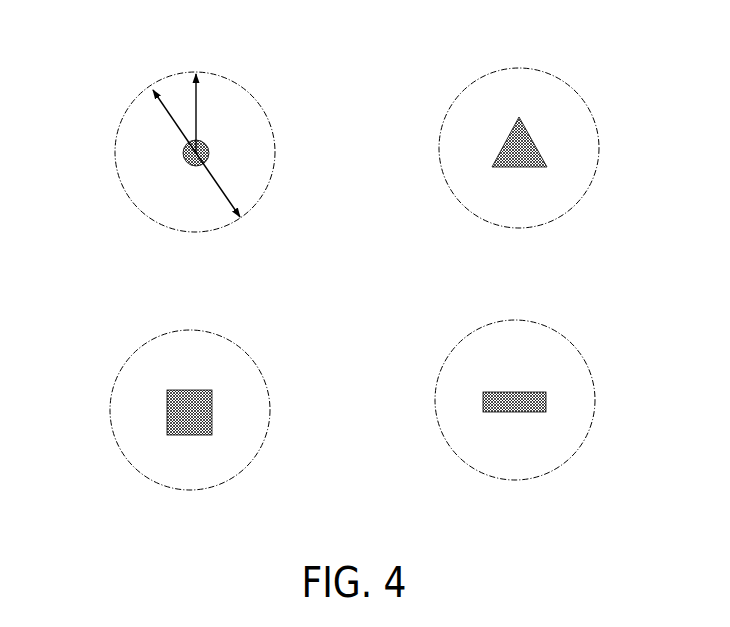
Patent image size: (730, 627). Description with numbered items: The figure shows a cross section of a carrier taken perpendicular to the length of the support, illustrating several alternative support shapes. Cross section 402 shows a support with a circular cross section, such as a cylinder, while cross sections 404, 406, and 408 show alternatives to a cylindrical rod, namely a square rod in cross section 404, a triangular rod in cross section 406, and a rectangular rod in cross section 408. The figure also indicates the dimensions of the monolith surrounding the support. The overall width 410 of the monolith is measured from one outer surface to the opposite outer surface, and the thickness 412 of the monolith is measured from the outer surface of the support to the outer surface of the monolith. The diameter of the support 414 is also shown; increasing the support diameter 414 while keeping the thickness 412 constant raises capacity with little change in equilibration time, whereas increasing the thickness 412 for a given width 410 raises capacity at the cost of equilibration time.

The cross section 402 is at (258, 100).
The cross section 404 is at (235, 345).
The cross section 406 is at (577, 92).
The cross section 408 is at (578, 450).
The overall width 410 is at (153, 89).
The thickness 412 is at (196, 73).
The diameter of the support 414 is at (190, 156).